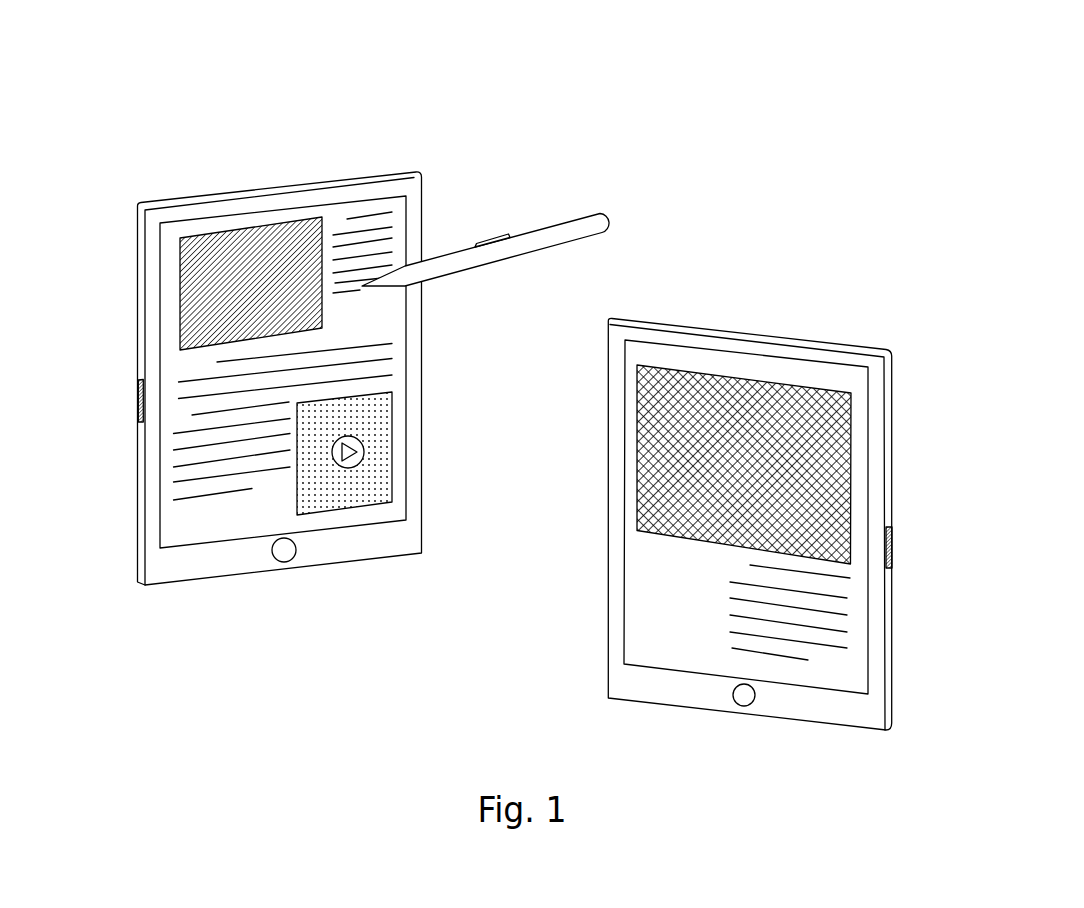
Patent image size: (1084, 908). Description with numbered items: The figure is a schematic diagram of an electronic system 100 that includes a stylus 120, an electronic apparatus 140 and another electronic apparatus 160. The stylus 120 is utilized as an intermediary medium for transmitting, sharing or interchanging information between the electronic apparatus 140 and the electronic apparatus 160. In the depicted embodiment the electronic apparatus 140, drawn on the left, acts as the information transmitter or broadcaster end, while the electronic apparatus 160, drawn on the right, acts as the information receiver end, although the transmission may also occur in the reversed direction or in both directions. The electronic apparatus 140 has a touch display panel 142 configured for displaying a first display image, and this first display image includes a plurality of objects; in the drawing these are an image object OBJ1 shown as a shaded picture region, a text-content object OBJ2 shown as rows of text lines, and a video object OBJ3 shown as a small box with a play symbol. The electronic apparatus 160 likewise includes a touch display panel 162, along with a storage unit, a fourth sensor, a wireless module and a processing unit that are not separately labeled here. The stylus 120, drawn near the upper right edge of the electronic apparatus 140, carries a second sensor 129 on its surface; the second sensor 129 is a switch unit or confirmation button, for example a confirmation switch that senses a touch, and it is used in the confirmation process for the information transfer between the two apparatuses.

The electronic system 100 is at (655, 84).
The electronic apparatus 140 is at (232, 187).
The touch display panel 142 is at (359, 198).
The stylus 120 is at (557, 224).
The second sensor 129 is at (483, 244).
The electronic apparatus 160 is at (780, 332).
The touch display panel 162 is at (842, 367).
The image object OBJ1 is at (178, 283).
The text-content object OBJ2 is at (408, 359).
The video object OBJ3 is at (392, 437).